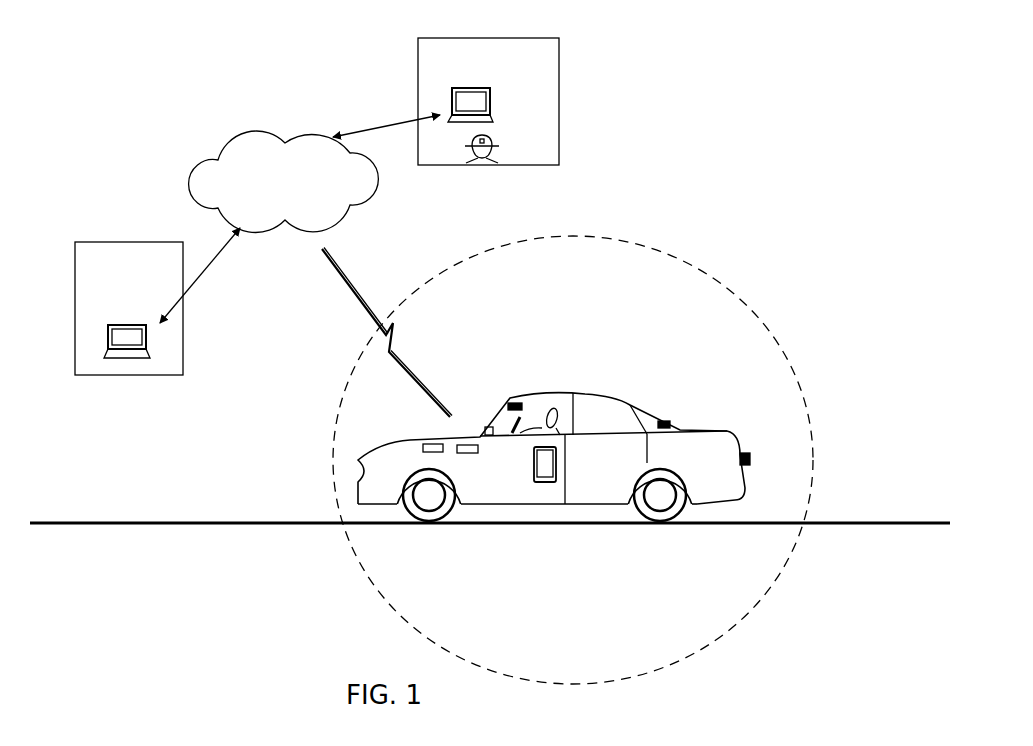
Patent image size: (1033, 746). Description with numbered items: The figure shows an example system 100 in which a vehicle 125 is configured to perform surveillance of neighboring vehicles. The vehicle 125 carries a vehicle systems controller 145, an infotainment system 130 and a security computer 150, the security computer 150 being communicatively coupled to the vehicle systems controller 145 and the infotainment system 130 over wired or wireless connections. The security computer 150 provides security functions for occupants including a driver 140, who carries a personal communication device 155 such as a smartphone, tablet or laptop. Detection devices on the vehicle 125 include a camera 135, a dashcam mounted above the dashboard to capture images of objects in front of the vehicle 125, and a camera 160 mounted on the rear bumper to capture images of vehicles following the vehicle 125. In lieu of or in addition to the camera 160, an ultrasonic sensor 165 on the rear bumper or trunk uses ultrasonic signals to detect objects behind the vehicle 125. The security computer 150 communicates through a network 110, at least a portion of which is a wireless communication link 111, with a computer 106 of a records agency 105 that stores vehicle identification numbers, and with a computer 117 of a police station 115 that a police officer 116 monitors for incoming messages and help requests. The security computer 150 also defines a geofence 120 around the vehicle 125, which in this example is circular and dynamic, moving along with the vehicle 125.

The system 100 is at (780, 85).
The records agency 105 is at (129, 308).
The computer 106 is at (148, 327).
The network 110 is at (284, 181).
The wireless communication link 111 is at (370, 312).
The police station 115 is at (488, 101).
The police officer 116 is at (505, 147).
The computer 117 is at (491, 93).
The geofence 120 is at (628, 240).
The vehicle 125 is at (612, 382).
The infotainment system 130 is at (485, 418).
The camera 135 is at (512, 397).
The driver 140 is at (548, 407).
The vehicle systems controller 145 is at (418, 446).
The security computer 150 is at (466, 454).
The personal communication device 155 is at (533, 478).
The camera 160 is at (664, 428).
The ultrasonic sensor 165 is at (750, 460).